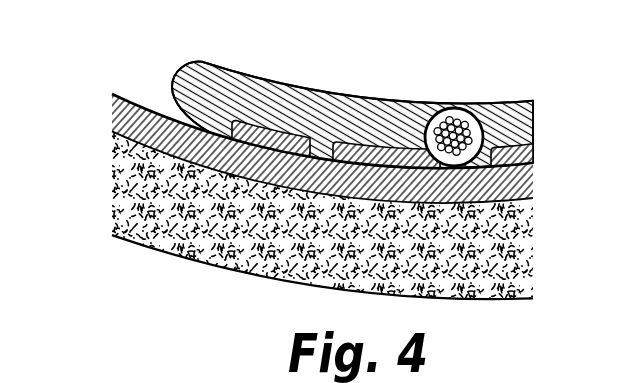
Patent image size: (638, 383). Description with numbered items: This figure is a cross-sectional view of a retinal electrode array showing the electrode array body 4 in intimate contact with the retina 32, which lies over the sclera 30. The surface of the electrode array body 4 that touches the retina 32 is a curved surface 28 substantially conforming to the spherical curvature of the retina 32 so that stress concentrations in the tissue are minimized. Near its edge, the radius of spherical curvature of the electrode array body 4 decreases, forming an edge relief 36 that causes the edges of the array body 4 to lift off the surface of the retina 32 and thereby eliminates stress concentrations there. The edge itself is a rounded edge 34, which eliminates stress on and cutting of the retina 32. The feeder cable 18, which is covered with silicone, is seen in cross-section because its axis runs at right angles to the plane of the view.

The electrode array body 4 is at (365, 97).
The feeder cable 18 is at (452, 117).
The curved surface 28 is at (491, 168).
The sclera 30 is at (118, 236).
The retina 32 is at (110, 119).
The rounded edge 34 is at (184, 67).
The edge relief 36 is at (172, 105).